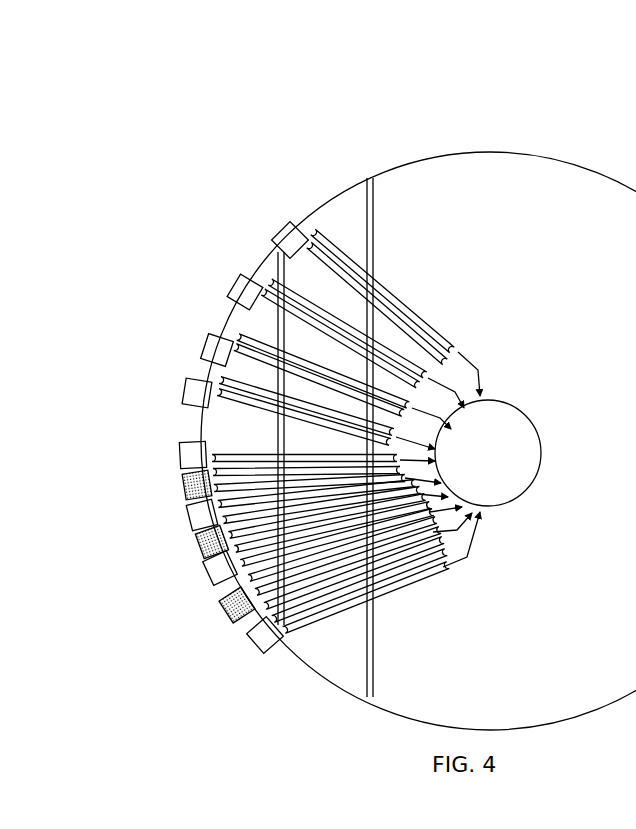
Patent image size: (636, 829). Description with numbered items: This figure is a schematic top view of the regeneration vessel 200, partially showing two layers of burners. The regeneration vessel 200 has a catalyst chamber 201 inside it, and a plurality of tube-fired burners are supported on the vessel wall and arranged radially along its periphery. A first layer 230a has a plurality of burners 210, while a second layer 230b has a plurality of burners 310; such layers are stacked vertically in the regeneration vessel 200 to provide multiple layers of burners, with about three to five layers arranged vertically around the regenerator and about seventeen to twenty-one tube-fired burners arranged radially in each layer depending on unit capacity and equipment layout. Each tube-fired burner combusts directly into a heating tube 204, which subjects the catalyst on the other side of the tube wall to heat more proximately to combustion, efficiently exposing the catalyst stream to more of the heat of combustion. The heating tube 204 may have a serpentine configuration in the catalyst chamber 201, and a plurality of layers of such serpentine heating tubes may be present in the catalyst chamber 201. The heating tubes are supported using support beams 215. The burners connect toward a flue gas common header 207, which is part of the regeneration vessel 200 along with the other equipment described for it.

The regeneration vessel 200 is at (170, 110).
The catalyst chamber 201 is at (268, 444).
The heating tube 204 is at (473, 397).
The flue gas common header 207 is at (542, 450).
The tube-fired burners 210 is at (270, 225).
The support beams 215 is at (374, 177).
The first layer 230a is at (321, 226).
The second layer 230b is at (437, 524).
The burners 310 is at (180, 491).